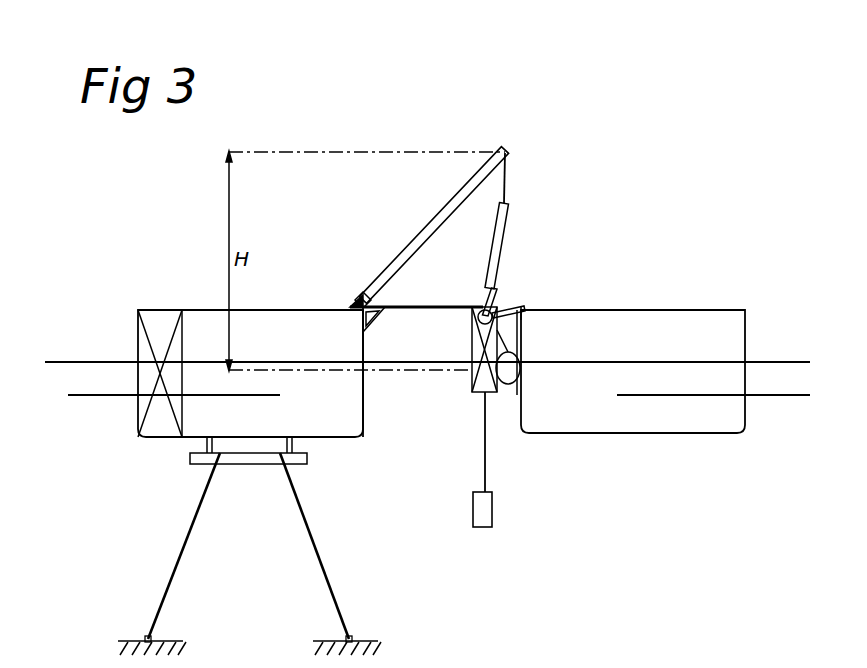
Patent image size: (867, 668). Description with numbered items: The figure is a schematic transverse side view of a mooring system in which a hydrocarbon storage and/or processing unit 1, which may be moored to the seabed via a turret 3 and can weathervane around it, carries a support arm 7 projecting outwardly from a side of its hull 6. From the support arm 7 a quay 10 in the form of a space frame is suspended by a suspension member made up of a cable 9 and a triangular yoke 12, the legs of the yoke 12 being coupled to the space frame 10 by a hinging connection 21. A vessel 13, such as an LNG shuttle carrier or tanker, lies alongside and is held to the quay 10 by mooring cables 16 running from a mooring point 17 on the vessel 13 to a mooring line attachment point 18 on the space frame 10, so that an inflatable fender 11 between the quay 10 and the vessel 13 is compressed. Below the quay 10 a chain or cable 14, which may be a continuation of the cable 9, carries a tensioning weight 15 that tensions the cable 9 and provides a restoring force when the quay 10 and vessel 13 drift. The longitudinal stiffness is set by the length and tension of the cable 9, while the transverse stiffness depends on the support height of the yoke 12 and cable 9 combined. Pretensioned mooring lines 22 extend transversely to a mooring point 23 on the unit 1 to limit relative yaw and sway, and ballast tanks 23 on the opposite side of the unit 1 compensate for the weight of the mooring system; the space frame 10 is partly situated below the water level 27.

The storage and/or processing unit 1 is at (212, 332).
The turret 3 is at (281, 334).
The hull 6 is at (345, 340).
The support arm 7 is at (456, 202).
The cable 9 is at (509, 186).
The quay 10 is at (470, 357).
The fender 11 is at (505, 392).
The triangular yoke 12 is at (509, 231).
The vessel 13 is at (650, 327).
The chain or cable 14 is at (484, 440).
The tensioning weight 15 is at (483, 501).
The mooring cables 16 is at (512, 305).
The mooring point 17 is at (528, 306).
The mooring line attachment point 18 is at (503, 304).
The hinging connection 21 is at (482, 308).
The mooring lines 22 is at (413, 306).
The ballast tanks 23 is at (160, 332).
The water level 27 is at (88, 362).